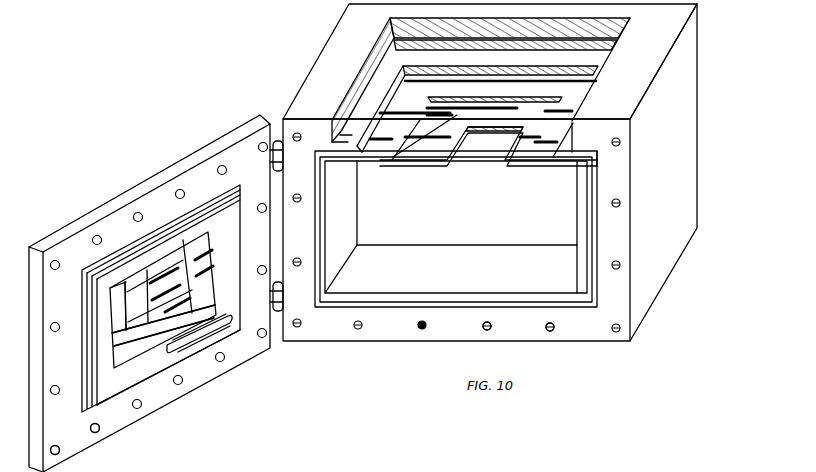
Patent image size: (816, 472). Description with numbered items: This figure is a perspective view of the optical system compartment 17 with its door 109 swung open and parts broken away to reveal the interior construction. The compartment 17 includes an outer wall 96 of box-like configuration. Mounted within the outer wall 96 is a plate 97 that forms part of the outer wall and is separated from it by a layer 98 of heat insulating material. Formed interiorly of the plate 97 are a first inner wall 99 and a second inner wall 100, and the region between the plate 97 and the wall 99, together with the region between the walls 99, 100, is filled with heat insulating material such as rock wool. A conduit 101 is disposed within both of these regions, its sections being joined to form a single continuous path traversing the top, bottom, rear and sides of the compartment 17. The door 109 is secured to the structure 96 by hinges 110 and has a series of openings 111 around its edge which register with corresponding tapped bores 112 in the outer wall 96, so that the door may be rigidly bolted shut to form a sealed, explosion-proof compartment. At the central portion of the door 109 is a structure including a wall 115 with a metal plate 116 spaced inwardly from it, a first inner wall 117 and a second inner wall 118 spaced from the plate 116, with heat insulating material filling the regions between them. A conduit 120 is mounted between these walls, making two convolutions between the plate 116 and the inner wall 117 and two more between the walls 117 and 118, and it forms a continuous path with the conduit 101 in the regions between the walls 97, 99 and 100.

The compartment 17 is at (702, 89).
The outer wall 96 is at (680, 246).
The plate 97 is at (342, 152).
The layer of heat insulating material 98 is at (618, 47).
The first inner wall 99 is at (370, 152).
The second inner wall 100 is at (413, 153).
The conduit 101 is at (585, 81).
The door 109 is at (155, 182).
The hinges 110 is at (273, 166).
The openings 111 is at (91, 428).
The tapped bores 112 is at (546, 327).
The wall 115 is at (122, 299).
The plate 116 is at (143, 327).
The first inner wall 117 is at (120, 357).
The second inner wall 118 is at (233, 253).
The conduit 120 is at (210, 341).